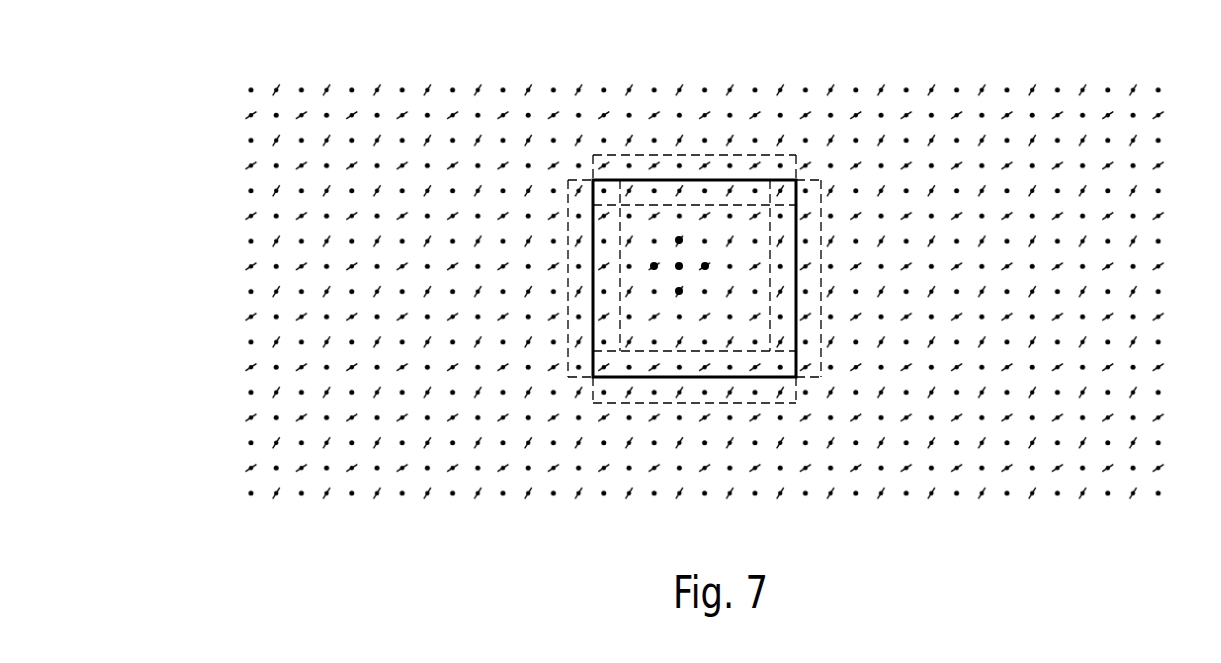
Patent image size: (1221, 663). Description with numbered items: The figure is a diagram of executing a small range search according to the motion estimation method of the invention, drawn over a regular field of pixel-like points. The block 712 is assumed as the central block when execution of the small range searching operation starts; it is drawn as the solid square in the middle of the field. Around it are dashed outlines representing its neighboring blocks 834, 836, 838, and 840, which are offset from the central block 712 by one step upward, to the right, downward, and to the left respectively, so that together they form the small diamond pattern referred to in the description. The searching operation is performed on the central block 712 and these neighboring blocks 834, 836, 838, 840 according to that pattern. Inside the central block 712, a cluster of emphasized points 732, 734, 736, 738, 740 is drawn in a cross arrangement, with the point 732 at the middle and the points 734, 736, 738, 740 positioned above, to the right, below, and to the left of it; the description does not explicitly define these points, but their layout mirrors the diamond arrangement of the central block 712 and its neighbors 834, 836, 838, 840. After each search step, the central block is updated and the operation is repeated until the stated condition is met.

The central block 712 is at (796, 225).
The center pixel 732 is at (679, 266).
The upper neighboring pixel 734 is at (679, 240).
The right neighboring pixel 736 is at (705, 266).
The lower neighboring pixel 738 is at (679, 291).
The left neighboring pixel 740 is at (654, 266).
The neighboring block 834 is at (686, 155).
The neighboring block 836 is at (821, 196).
The neighboring block 838 is at (716, 403).
The left shifted block boundary 840 is at (568, 228).